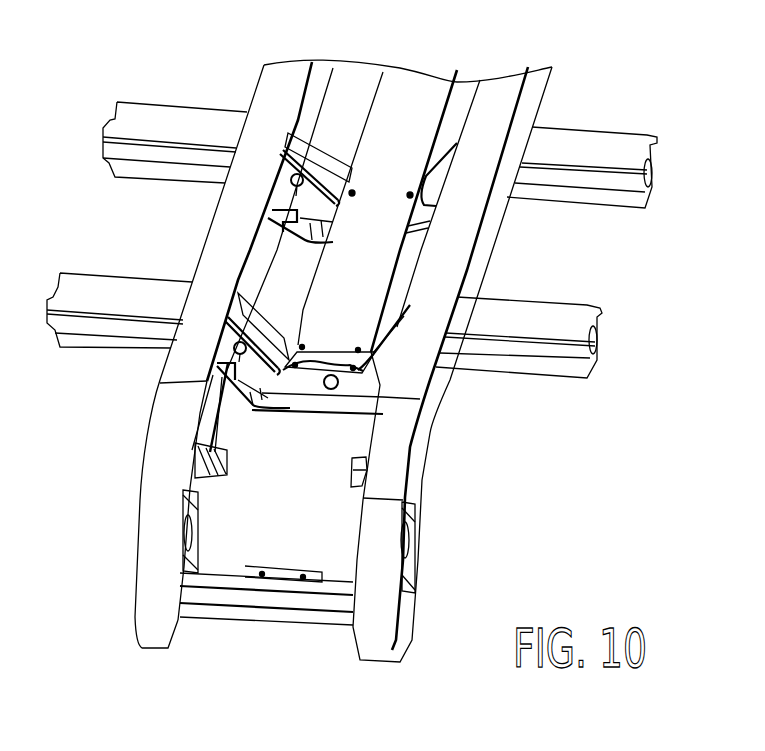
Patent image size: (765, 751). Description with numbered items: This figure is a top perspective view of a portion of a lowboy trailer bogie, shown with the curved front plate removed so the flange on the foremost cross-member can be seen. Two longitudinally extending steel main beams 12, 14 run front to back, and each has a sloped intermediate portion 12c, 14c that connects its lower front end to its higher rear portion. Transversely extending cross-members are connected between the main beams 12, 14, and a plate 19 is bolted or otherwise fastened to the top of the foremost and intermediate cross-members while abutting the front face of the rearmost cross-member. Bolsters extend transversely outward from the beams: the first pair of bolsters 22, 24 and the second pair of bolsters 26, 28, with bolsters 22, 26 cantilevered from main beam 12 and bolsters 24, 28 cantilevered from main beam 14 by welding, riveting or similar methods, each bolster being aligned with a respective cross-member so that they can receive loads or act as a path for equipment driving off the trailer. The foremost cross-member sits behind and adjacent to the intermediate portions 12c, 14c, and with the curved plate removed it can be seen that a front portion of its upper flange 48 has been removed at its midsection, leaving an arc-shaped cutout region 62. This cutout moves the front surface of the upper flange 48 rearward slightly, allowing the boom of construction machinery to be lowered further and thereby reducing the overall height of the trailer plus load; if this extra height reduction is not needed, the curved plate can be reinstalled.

The main beam 12 is at (263, 110).
The main beam 14 is at (493, 90).
The sloped intermediate portion 12c is at (158, 427).
The sloped intermediate portion 14c is at (394, 457).
The plate 19 is at (425, 88).
The bolster 22 is at (120, 335).
The bolster 24 is at (540, 352).
The bolster 26 is at (183, 157).
The bolster 28 is at (623, 183).
The upper flange 48 is at (275, 343).
The arc-shaped cutout region 62 is at (316, 378).